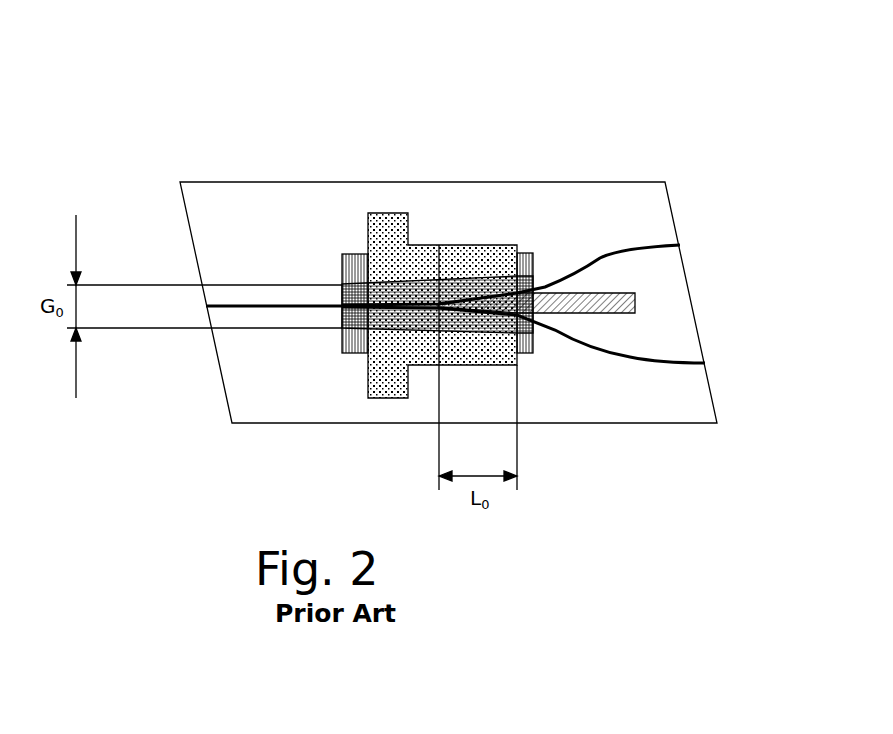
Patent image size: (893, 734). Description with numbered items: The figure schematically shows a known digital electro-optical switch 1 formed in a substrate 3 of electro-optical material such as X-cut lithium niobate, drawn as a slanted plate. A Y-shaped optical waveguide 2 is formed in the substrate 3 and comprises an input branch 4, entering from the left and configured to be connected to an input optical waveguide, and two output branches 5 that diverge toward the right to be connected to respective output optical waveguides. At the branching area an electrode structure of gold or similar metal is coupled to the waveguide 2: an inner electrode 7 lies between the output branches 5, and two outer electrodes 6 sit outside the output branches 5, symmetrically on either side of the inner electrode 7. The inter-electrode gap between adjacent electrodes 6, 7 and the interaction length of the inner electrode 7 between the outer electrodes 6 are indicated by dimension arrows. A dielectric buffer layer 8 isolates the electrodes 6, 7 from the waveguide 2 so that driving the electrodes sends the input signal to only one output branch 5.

The digital electro-optical switch 1 is at (118, 118).
The Y-shaped optical waveguide 2 is at (438, 282).
The substrate 3 is at (252, 404).
The input branch 4 is at (237, 307).
The output branches 5 is at (665, 248).
The outer electrodes 6 is at (518, 246).
The inner electrode 7 is at (608, 290).
The dielectric buffer layer 8 is at (340, 263).